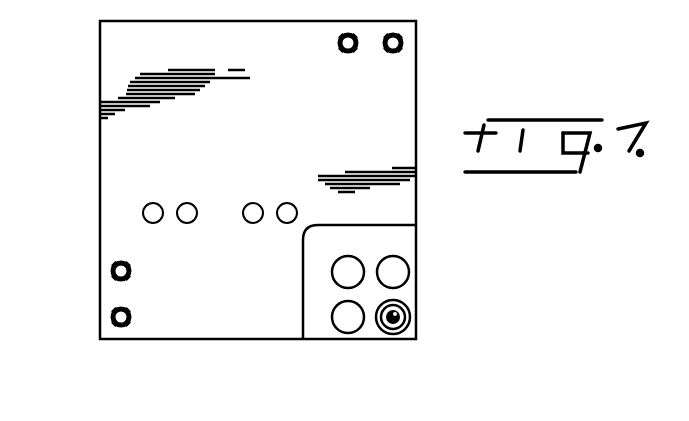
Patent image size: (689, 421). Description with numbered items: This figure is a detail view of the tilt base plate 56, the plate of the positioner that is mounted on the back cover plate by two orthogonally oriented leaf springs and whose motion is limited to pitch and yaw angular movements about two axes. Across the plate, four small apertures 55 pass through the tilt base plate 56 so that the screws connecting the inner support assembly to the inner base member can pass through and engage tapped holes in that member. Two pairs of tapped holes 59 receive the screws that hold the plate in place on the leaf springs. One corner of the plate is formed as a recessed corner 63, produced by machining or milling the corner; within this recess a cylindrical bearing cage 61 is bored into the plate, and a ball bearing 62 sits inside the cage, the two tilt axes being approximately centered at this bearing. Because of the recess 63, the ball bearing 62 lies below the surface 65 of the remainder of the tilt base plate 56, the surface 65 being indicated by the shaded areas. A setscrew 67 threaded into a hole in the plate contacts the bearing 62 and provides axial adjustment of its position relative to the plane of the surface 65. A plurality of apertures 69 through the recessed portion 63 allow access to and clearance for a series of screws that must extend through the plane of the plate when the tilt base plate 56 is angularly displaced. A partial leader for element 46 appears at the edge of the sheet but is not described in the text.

The leader fragment 46 is at (655, 2).
The apertures 55 is at (286, 207).
The tilt base plate 56 is at (98, 197).
The tapped holes 59 is at (388, 54).
The cylindrical bearing cage 61 is at (398, 304).
The ball bearing 62 is at (393, 334).
The recessed corner 63 is at (405, 239).
The surface 65 is at (132, 131).
The setscrew 67 is at (402, 315).
The apertures 69 is at (340, 279).